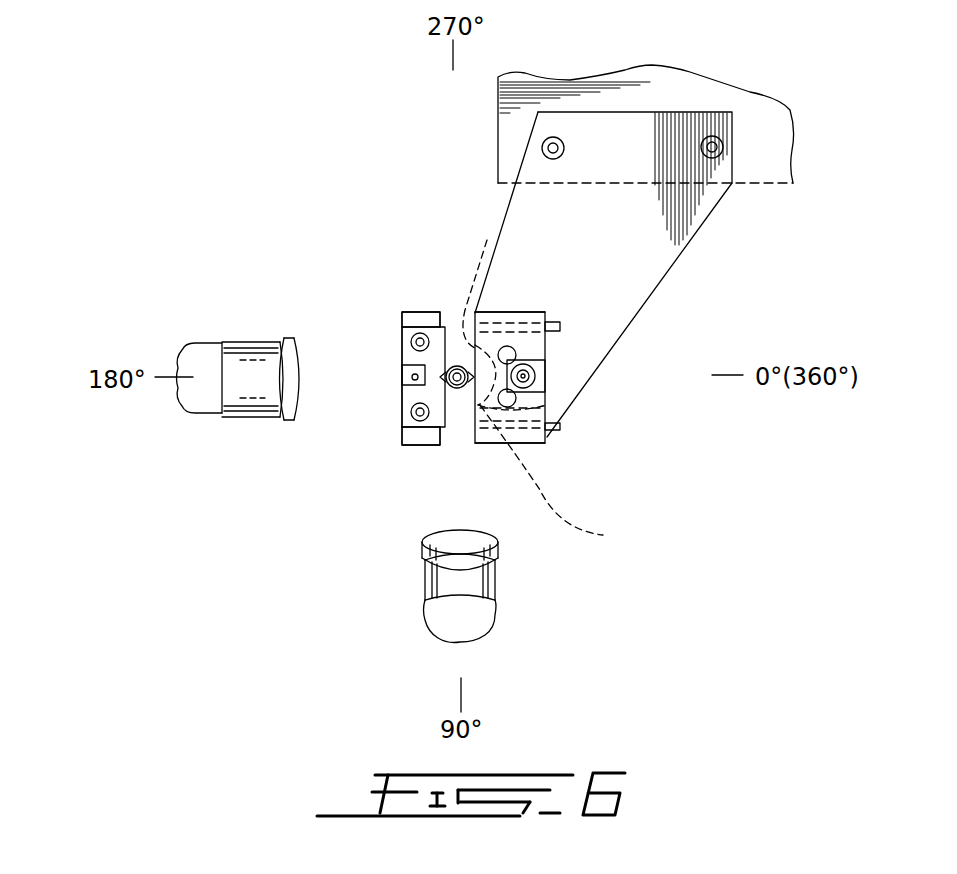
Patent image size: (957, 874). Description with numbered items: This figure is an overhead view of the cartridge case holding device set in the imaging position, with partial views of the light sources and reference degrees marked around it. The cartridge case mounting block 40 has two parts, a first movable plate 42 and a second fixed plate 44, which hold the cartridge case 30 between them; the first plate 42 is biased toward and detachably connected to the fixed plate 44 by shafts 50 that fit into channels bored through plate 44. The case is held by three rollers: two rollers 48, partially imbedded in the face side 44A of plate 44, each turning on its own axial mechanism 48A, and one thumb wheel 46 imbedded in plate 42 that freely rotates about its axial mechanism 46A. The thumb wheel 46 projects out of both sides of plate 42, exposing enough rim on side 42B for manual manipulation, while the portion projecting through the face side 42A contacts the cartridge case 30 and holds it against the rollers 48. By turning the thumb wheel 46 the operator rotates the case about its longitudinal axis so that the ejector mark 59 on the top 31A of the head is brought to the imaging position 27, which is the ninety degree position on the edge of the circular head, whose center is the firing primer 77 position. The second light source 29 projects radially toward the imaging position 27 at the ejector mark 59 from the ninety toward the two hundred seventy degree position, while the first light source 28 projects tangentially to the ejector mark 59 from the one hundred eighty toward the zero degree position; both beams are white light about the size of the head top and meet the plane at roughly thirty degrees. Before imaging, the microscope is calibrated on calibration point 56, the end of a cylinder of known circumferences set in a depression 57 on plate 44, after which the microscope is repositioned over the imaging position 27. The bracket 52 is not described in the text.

The imaging position 27 is at (523, 443).
The first light source 28 is at (232, 343).
The second light source 29 is at (500, 597).
The cartridge case 30 is at (447, 393).
The top of head 31A is at (447, 385).
The cartridge case mounting block 40 is at (355, 183).
The first movable plate 42 is at (413, 313).
The face side of plate 42 42A is at (440, 443).
The side of plate 42 42B is at (402, 337).
The second fixed plate 44 is at (530, 443).
The face side of plate 44 44A is at (475, 313).
The thumb wheel 46 is at (402, 380).
The axial mechanism of thumb wheel 46A is at (402, 372).
The rollers 48 is at (452, 327).
The axial mechanisms of rollers 48A is at (487, 240).
The shafts 50 is at (678, 266).
The bracket 52 is at (693, 205).
The calibration point 56 is at (547, 368).
The depression 57 is at (523, 376).
The ejector mark 59 is at (460, 392).
The firing primer position 77 is at (420, 318).